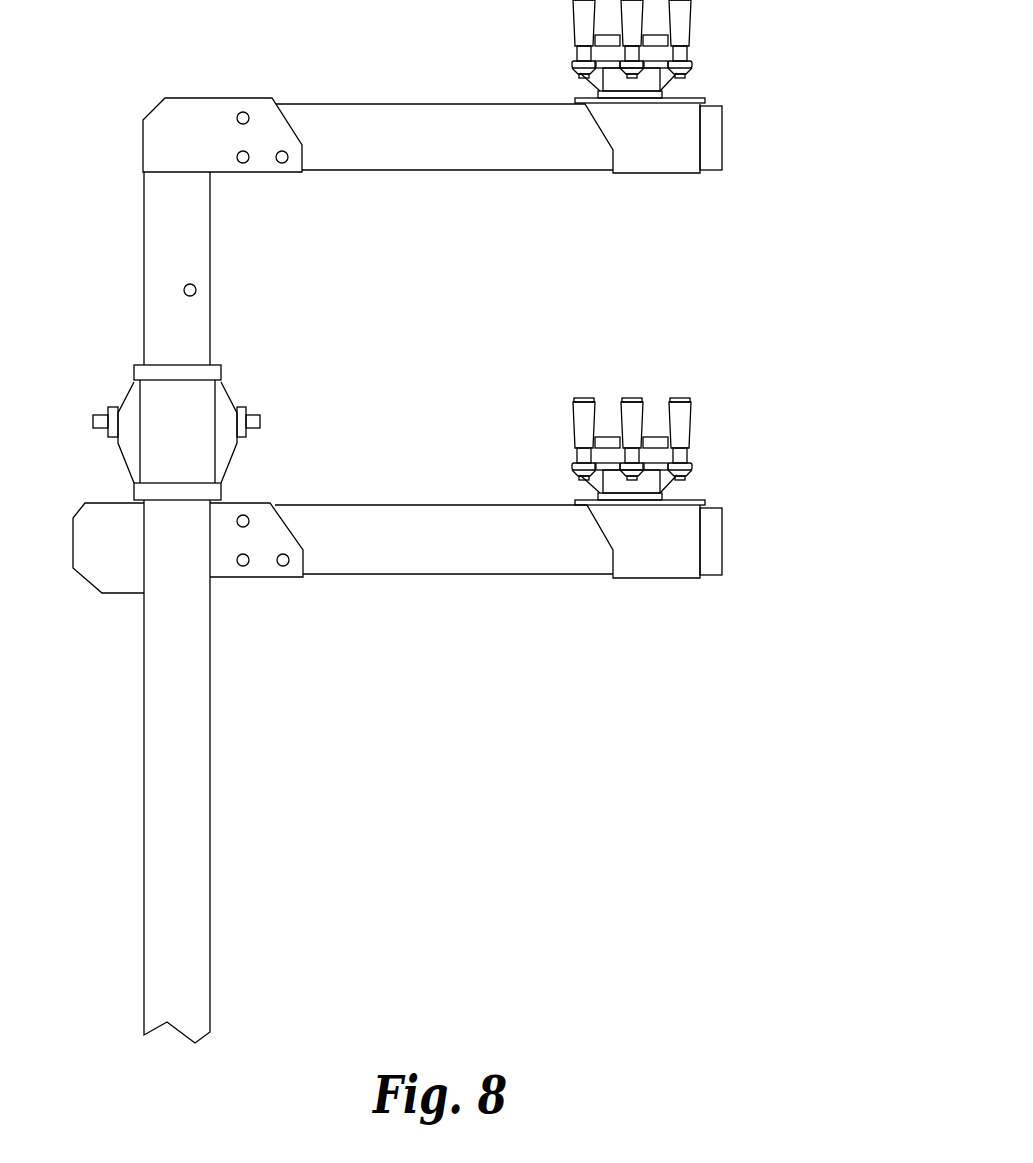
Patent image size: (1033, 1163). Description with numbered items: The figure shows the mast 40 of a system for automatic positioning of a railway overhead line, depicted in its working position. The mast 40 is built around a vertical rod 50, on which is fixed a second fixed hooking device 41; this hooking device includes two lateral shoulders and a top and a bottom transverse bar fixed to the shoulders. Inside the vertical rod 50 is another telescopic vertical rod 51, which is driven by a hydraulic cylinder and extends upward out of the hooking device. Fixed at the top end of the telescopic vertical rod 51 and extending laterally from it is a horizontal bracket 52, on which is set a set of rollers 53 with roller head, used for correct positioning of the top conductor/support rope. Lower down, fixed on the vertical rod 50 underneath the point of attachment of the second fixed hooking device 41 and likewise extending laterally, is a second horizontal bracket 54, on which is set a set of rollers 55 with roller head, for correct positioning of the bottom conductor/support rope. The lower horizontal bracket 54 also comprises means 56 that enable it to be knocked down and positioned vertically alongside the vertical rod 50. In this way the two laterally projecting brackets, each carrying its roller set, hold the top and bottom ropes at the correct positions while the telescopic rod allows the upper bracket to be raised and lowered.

The mast 40 is at (410, 521).
The second fixed hooking device 41 is at (160, 405).
The vertical rod 50 is at (165, 807).
The telescopic vertical rod 51 is at (165, 233).
The horizontal bracket 52 is at (432, 128).
The set of rollers 53 is at (633, 54).
The horizontal bracket 54 is at (463, 555).
The set of rollers 55 is at (663, 555).
The means for enabling knock-down 56 is at (258, 592).